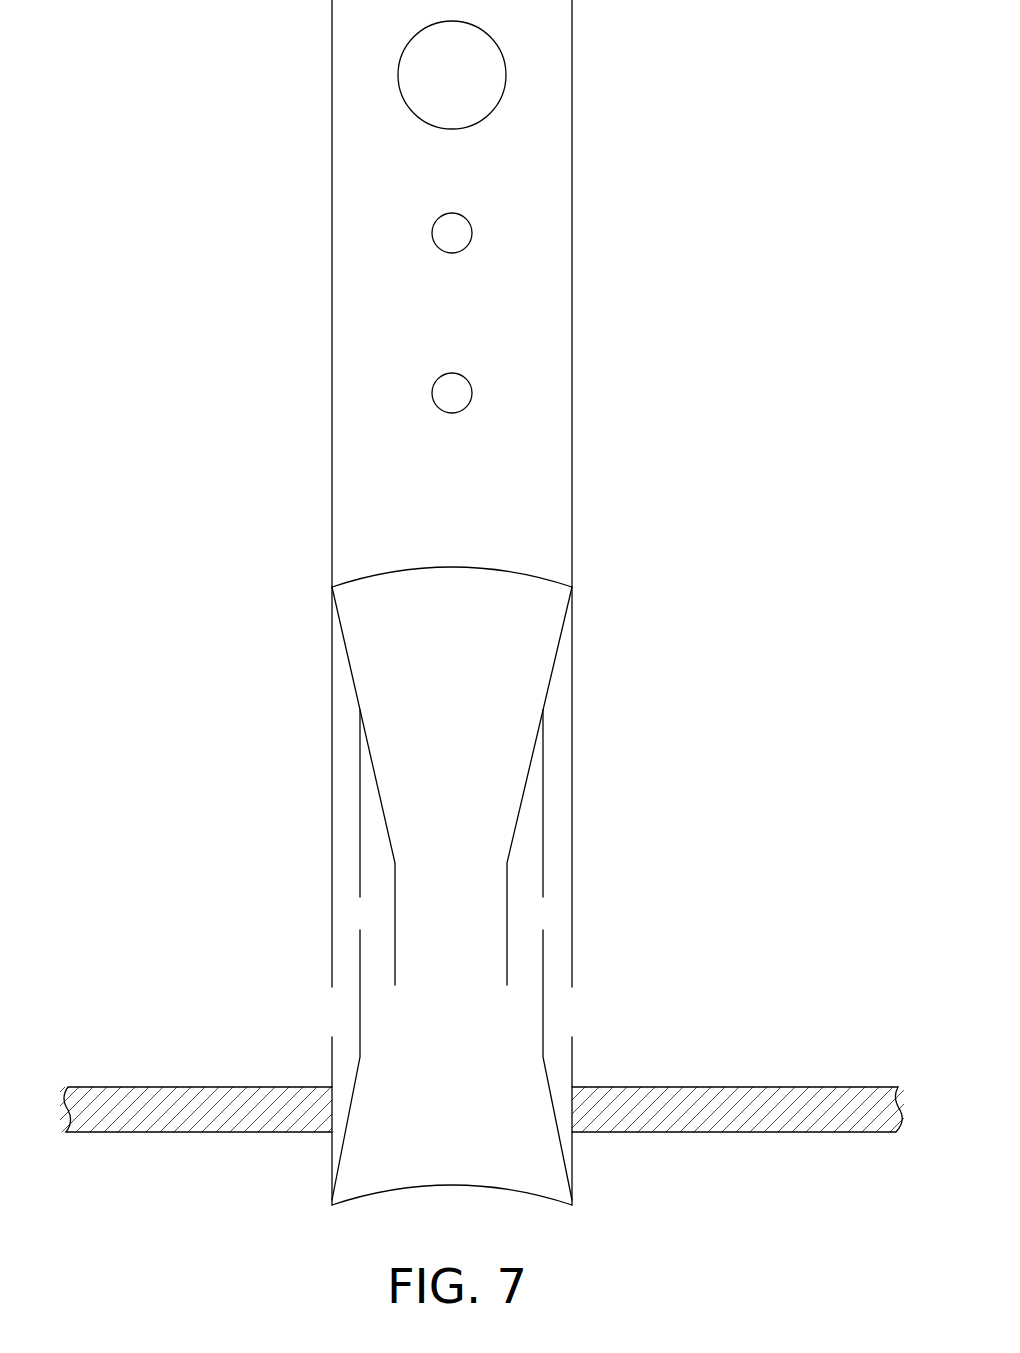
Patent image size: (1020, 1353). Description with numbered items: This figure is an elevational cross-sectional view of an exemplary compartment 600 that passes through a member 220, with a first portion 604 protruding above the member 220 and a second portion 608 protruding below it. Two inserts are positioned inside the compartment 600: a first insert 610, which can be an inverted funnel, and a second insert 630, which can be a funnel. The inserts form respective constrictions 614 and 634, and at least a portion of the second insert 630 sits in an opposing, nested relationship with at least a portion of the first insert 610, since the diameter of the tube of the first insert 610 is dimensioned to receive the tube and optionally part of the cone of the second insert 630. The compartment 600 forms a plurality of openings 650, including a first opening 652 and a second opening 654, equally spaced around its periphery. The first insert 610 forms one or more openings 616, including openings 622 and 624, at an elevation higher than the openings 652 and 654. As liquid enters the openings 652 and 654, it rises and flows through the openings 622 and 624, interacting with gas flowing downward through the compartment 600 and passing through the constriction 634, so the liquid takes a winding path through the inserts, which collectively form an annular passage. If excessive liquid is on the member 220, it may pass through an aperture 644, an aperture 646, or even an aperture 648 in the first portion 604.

The compartment 600 is at (572, 143).
The first portion 604 is at (332, 74).
The aperture 648 is at (403, 105).
The aperture 646 is at (452, 213).
The aperture 644 is at (452, 373).
The second insert 630 is at (350, 650).
The constriction 634 is at (485, 871).
The constriction 614 is at (378, 1032).
The second portion 608 is at (332, 1165).
The first insert 610 is at (548, 1103).
The opening 622 is at (358, 908).
The openings 616 is at (345, 930).
The opening 624 is at (542, 914).
The first opening 652 is at (333, 1003).
The openings 650 is at (307, 1030).
The second opening 654 is at (572, 1013).
The member 220 is at (797, 1133).